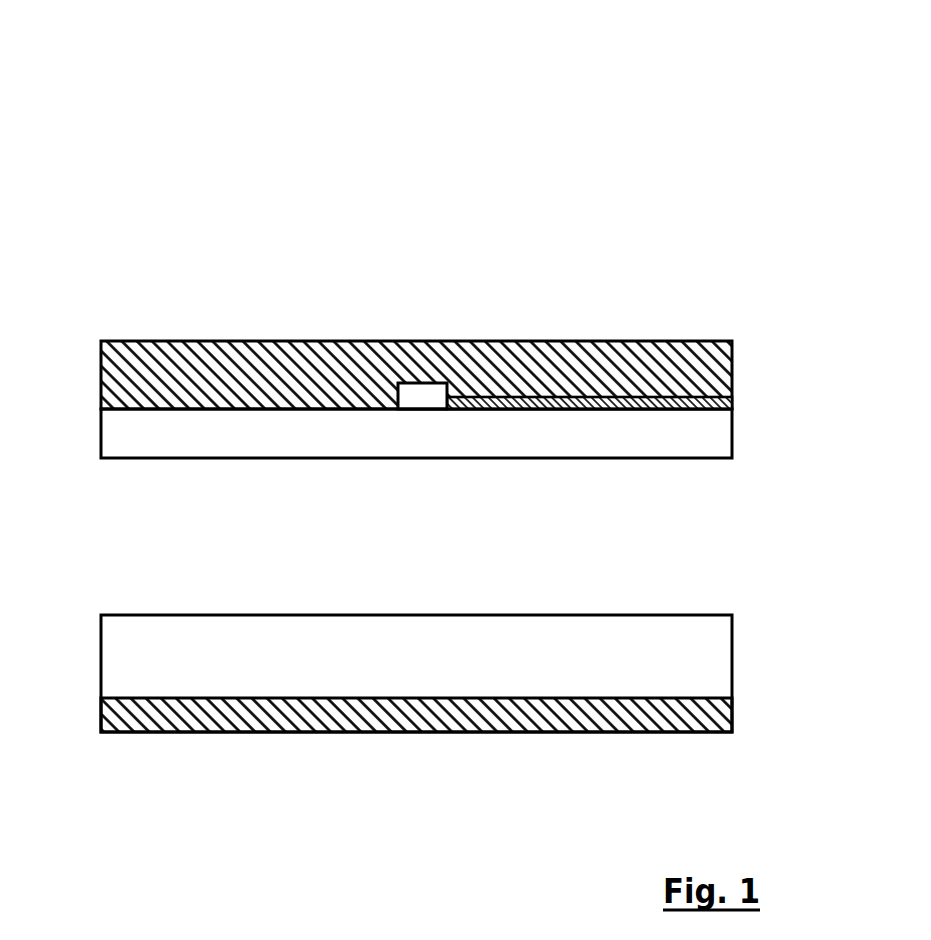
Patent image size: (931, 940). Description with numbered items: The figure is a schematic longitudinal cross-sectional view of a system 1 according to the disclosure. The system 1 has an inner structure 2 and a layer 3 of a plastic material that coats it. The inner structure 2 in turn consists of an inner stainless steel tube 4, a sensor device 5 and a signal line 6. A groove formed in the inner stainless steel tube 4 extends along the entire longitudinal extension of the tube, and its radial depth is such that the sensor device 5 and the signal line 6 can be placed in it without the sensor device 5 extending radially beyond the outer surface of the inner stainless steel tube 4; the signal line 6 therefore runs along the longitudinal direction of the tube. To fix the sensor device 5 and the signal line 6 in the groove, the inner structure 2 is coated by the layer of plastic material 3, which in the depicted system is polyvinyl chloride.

The system 1 is at (438, 441).
The inner structure 2 is at (330, 330).
The layer of plastic material 3 is at (155, 340).
The inner stainless steel tube 4 is at (648, 342).
The sensor device 5 is at (423, 342).
The signal line 6 is at (547, 342).